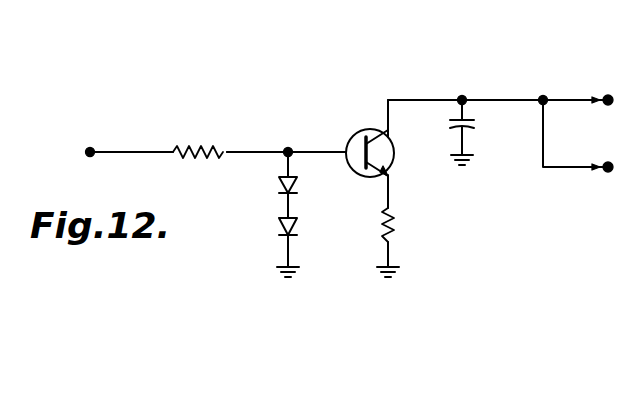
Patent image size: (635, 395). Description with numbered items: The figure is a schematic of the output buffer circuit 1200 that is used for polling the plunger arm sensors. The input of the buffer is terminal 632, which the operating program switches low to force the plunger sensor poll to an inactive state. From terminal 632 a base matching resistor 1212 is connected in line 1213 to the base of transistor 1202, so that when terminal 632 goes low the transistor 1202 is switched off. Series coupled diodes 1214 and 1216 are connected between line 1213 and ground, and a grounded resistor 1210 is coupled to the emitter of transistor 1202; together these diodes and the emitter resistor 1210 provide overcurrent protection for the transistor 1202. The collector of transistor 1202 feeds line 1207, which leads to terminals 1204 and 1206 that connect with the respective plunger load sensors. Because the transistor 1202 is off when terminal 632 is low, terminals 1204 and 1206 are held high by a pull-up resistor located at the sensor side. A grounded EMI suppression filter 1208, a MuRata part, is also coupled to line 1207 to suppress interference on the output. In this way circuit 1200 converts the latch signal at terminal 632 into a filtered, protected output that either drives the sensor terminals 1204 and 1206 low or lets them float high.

The terminal 632 is at (84, 150).
The base matching resistor 1212 is at (176, 148).
The line 1213 is at (238, 150).
The transistor 1202 is at (350, 133).
The diode 1214 is at (280, 187).
The diode 1216 is at (280, 228).
The grounded resistor 1210 is at (392, 232).
The line 1207 is at (488, 99).
The EMI suppression filter 1208 is at (470, 133).
The terminal 1204 is at (612, 96).
The terminal 1206 is at (620, 154).
The circuit 1200 is at (485, 208).